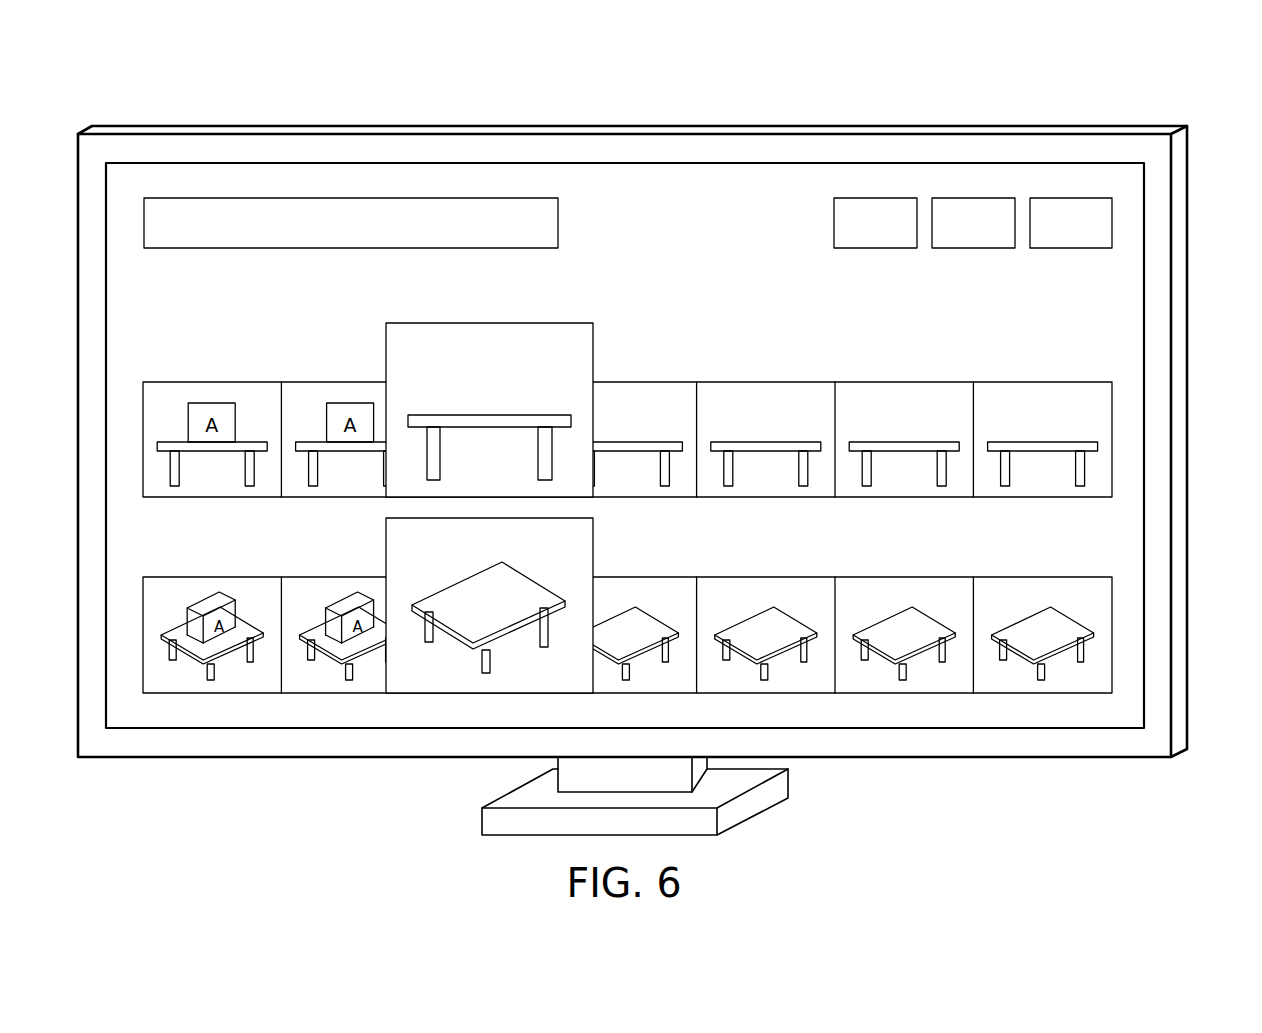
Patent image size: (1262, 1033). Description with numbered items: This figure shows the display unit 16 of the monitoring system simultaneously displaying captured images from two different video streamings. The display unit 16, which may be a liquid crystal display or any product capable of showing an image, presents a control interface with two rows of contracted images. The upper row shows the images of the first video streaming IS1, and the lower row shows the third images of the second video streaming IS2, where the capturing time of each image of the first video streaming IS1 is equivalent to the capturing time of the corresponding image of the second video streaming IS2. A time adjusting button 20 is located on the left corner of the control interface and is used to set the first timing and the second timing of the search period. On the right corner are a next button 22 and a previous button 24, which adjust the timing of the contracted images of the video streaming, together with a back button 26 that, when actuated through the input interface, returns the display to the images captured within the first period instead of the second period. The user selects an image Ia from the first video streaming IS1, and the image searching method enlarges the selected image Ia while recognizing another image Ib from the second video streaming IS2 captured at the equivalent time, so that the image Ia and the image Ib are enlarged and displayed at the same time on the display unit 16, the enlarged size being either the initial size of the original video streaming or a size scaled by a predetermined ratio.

The display unit 16 is at (1160, 94).
The time adjusting button 20 is at (518, 198).
The next button 22 is at (1069, 198).
The previous button 24 is at (972, 198).
The back button 26 is at (875, 198).
The image Ia is at (594, 351).
The image Ib is at (594, 548).
The first video streaming IS1 is at (627, 423).
The second video streaming IS2 is at (627, 618).